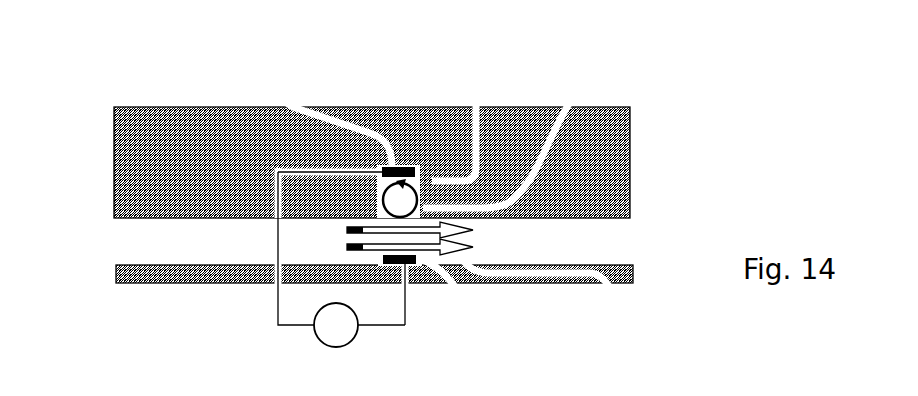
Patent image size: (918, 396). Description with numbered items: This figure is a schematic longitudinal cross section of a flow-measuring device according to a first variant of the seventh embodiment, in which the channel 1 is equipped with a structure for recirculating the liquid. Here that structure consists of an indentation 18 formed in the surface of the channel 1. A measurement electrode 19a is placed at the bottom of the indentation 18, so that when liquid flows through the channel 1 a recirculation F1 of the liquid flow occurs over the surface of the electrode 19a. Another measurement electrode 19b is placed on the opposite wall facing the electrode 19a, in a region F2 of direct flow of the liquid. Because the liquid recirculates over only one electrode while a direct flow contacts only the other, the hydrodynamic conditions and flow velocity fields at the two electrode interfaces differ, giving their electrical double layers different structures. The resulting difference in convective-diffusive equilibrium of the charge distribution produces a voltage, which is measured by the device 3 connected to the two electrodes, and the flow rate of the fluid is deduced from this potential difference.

The channel 1 is at (125, 230).
The device 3 is at (346, 346).
The indentation 18 is at (432, 181).
The measurement electrode 19a is at (392, 166).
The measurement electrode 19b is at (416, 258).
The recirculation F1 is at (423, 208).
The region of direct flow F2 is at (455, 252).